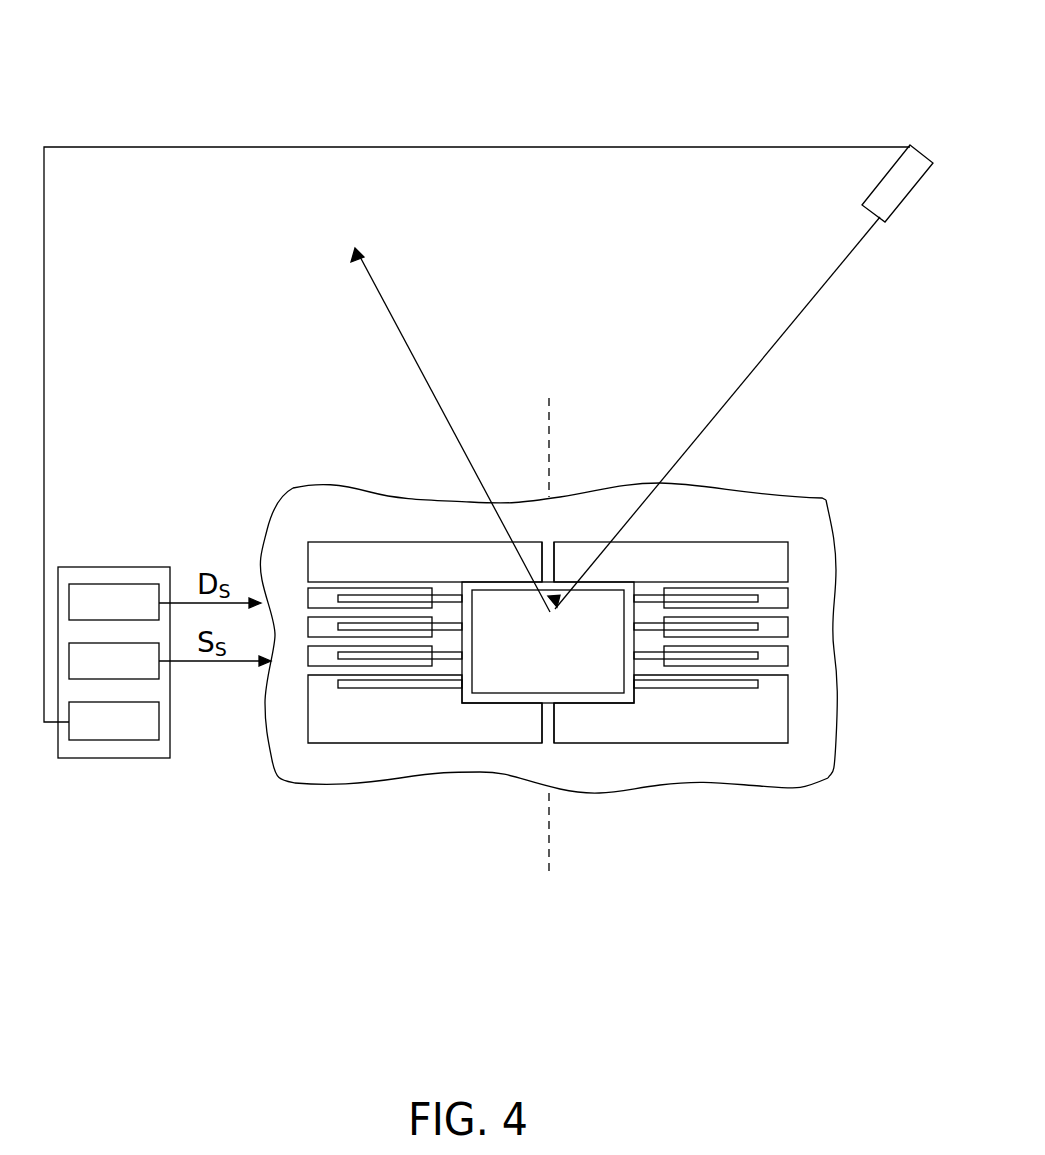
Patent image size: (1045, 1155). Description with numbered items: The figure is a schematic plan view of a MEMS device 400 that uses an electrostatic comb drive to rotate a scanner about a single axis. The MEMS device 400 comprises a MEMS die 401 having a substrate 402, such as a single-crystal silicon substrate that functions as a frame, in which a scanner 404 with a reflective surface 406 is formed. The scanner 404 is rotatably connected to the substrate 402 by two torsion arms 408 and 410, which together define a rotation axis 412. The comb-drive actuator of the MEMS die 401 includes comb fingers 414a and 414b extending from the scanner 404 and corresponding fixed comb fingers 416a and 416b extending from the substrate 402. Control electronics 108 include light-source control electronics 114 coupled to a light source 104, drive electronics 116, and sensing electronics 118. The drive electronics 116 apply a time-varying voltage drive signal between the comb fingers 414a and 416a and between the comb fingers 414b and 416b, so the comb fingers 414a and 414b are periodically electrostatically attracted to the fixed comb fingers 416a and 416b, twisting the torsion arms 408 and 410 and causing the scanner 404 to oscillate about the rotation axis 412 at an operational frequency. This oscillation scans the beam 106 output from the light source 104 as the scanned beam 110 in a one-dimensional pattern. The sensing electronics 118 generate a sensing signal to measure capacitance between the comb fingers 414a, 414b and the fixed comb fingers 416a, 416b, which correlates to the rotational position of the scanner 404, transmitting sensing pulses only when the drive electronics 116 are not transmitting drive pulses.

The MEMS device 400 is at (818, 76).
The MEMS die 401 is at (651, 411).
The substrate 402 is at (810, 520).
The scanner 404 is at (548, 642).
The reflective surface 406 is at (592, 658).
The torsion arm 408 is at (548, 562).
The torsion arm 410 is at (547, 727).
The rotation axis 412 is at (549, 639).
The comb fingers 414a is at (360, 688).
The comb fingers 414b is at (745, 685).
The fixed comb fingers 416a is at (398, 668).
The fixed comb fingers 416b is at (690, 670).
The light source 104 is at (895, 190).
The beam 106 is at (843, 253).
The control electronics 108 is at (114, 640).
The scanned beam 110 is at (406, 303).
The light-source control electronics 114 is at (114, 721).
The drive electronics 116 is at (114, 602).
The sensing electronics 118 is at (114, 661).